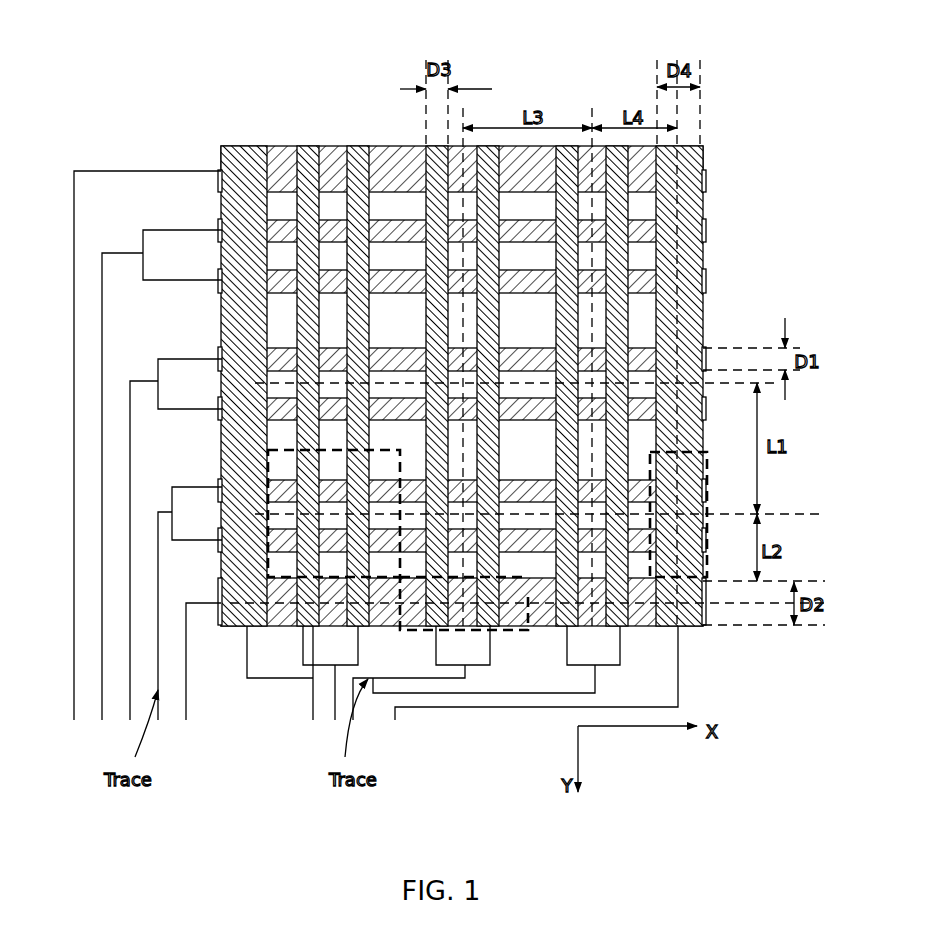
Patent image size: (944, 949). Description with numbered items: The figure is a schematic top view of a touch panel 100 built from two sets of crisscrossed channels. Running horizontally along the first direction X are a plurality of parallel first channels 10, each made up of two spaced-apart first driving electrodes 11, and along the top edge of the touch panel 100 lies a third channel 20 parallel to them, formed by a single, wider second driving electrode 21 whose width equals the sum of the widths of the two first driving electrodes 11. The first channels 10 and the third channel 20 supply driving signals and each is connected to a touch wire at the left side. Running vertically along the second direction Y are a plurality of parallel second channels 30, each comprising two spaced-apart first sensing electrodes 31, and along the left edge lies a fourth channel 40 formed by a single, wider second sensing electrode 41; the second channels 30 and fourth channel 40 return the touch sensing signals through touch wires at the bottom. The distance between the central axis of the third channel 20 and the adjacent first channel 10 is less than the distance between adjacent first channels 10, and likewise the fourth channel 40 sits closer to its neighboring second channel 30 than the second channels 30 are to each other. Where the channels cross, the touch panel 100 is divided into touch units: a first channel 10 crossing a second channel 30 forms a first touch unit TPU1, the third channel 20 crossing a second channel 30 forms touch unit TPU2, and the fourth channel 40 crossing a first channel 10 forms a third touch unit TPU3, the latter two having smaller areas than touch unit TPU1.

The touch panel 100 is at (428, 323).
The first channel 10 is at (122, 250).
The third channel 20 is at (180, 168).
The second sensing electrode 41 is at (238, 163).
The first sensing electrode 31 is at (306, 163).
The second driving electrode 21 is at (705, 173).
The first driving electrode 11 is at (705, 232).
The fourth channel 40 is at (245, 668).
The second channel 30 is at (448, 667).
The first touch unit TPU1 is at (337, 580).
The first touch unit TPU2 is at (504, 634).
The third touch unit TPU3 is at (679, 583).